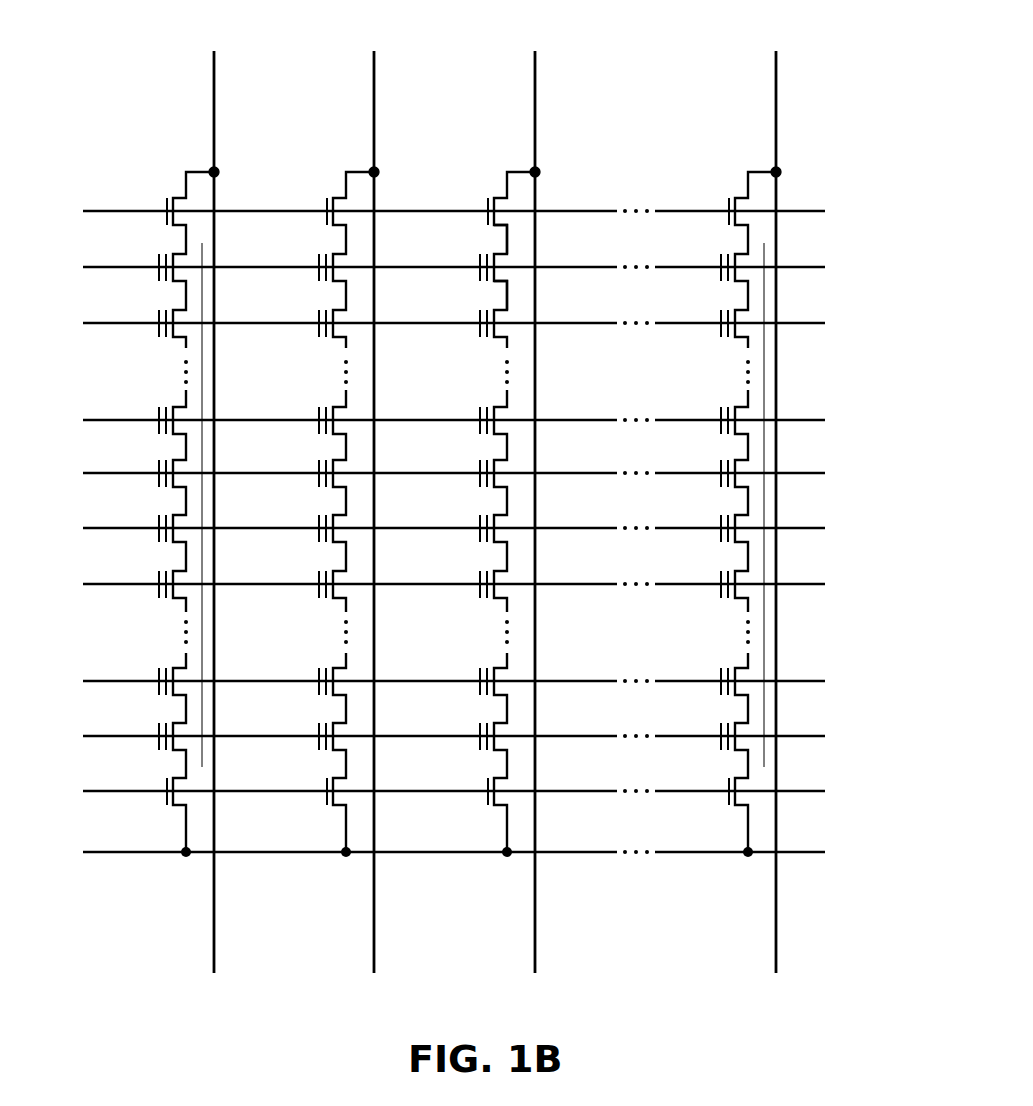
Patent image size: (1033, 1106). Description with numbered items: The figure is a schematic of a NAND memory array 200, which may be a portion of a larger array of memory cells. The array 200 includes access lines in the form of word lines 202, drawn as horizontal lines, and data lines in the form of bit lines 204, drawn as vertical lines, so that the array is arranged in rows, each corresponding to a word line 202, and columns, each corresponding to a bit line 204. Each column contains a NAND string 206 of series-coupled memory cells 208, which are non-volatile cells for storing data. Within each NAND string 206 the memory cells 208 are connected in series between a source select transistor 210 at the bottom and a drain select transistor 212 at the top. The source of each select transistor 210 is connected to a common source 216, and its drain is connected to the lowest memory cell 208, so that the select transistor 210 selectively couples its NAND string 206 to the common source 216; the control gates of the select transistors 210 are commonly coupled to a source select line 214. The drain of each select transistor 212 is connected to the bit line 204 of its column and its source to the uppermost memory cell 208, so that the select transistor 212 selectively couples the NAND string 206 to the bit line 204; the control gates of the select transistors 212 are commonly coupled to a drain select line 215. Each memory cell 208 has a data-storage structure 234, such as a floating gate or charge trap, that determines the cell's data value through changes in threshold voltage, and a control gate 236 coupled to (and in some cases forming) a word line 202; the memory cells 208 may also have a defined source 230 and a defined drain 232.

The NAND memory array 200 is at (688, 50).
The word line 202 is at (130, 734).
The bit line 204 is at (775, 98).
The NAND string 206 is at (764, 503).
The memory cell 208 is at (167, 753).
The select transistor 210 is at (742, 808).
The select transistor 212 is at (742, 195).
The select line 214 is at (677, 789).
The select line 215 is at (690, 209).
The common source 216 is at (148, 855).
The source 230 is at (508, 305).
The drain 232 is at (508, 252).
The data-storage structure 234 is at (485, 252).
The control gate 236 is at (485, 277).